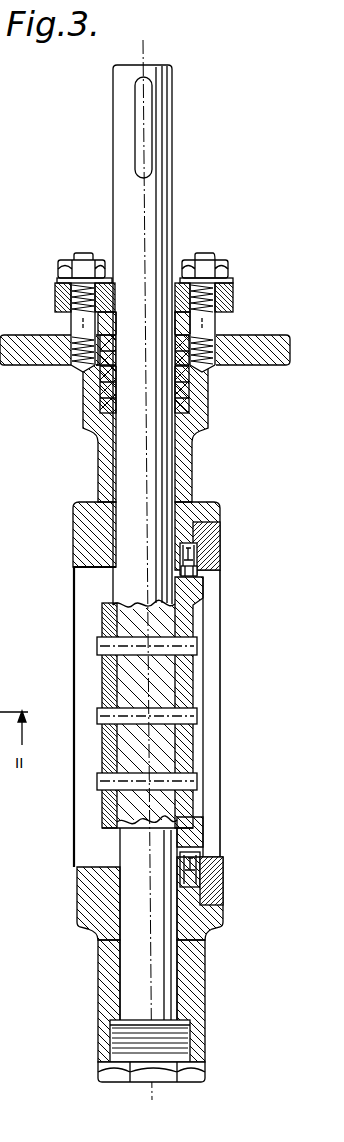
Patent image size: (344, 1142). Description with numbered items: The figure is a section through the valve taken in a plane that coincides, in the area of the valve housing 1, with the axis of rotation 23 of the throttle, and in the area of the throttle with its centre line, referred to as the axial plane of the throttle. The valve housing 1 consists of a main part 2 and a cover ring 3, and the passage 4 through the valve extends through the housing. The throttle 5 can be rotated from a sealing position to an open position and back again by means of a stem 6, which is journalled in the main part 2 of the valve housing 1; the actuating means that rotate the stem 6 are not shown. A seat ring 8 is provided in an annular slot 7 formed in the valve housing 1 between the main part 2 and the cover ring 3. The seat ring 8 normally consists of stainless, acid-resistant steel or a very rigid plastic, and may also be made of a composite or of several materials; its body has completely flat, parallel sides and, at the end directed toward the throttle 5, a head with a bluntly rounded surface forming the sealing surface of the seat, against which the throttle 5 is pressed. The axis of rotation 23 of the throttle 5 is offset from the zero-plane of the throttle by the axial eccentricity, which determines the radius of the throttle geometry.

The valve housing 1 is at (73, 505).
The main part 2 is at (85, 538).
The cover ring 3 is at (212, 530).
The passage 4 is at (214, 613).
The throttle 5 is at (190, 673).
The stem 6 is at (161, 92).
The annular slot 7 is at (197, 549).
The seat ring 8 is at (200, 571).
The axis of rotation 23 is at (143, 190).